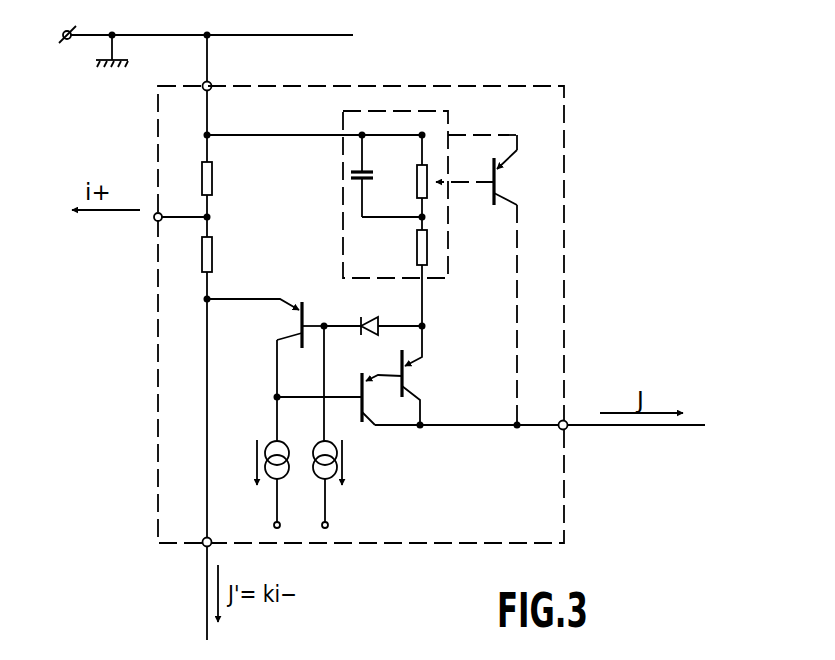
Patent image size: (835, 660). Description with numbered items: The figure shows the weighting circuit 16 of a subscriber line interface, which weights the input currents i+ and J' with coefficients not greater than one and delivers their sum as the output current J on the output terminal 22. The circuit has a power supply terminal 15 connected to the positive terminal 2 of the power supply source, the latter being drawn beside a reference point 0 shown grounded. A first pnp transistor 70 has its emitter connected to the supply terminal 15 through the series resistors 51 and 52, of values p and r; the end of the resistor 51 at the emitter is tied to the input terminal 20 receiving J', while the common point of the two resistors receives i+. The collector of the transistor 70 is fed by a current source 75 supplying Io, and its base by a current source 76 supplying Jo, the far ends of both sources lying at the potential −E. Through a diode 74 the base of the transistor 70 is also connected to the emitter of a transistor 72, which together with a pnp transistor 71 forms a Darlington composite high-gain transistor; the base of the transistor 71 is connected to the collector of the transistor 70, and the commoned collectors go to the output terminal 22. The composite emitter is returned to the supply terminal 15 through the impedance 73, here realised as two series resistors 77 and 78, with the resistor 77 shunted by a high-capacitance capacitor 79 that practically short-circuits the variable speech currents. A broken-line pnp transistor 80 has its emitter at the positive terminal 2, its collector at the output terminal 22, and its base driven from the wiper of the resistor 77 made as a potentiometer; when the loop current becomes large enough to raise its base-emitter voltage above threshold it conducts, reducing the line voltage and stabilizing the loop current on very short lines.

The reference potential (ground) terminal 0 is at (107, 38).
The positive terminal of the power supply source 2 is at (68, 40).
The power supply terminal 15 is at (210, 82).
The weighting circuit 16 is at (380, 86).
The input terminal 20 is at (204, 547).
The output terminal 22 is at (566, 429).
The series resistor 51 is at (202, 255).
The series resistor 52 is at (202, 178).
The first pnp transistor 70 is at (299, 326).
The pnp transistor 71 is at (364, 405).
The transistor 72 is at (405, 377).
The impedance 73 is at (343, 265).
The diode 74 is at (370, 321).
The current source 75 is at (272, 470).
The current source 76 is at (333, 470).
The resistor 77 is at (425, 180).
The resistor 78 is at (428, 242).
The capacitor 79 is at (352, 170).
The transistor 80 is at (497, 180).